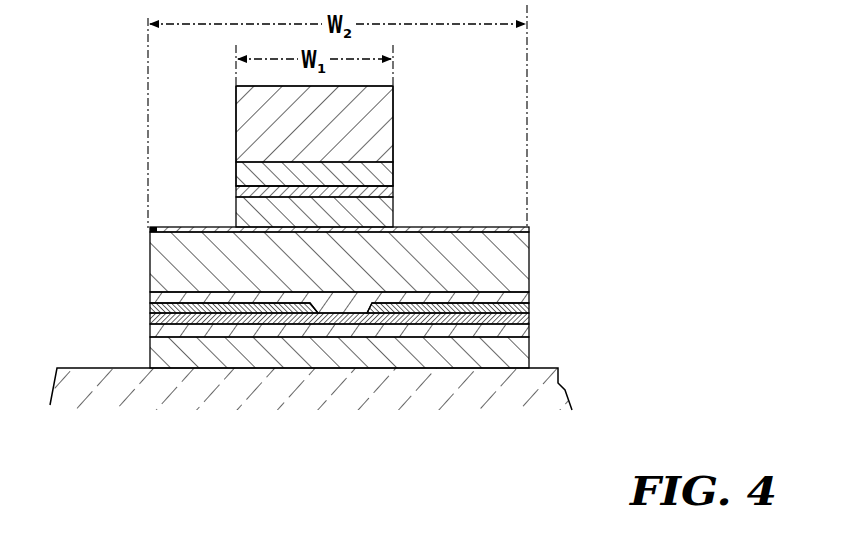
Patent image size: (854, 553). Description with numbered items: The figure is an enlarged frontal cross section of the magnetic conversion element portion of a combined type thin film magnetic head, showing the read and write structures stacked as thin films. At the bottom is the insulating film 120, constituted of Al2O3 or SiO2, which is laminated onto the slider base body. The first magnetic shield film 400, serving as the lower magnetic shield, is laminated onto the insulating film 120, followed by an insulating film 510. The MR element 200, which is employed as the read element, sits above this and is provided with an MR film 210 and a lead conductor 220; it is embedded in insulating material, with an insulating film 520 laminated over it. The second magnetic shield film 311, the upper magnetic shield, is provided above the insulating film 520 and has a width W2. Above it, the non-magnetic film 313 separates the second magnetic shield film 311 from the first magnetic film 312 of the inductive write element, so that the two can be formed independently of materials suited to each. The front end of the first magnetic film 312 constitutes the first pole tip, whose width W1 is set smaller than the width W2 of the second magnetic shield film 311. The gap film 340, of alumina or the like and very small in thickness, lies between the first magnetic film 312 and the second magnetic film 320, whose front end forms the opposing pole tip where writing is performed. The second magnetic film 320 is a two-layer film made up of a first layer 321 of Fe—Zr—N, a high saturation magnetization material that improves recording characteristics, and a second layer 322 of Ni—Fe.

The insulating film 120 is at (107, 392).
The MR element 200 is at (298, 376).
The MR film 210 is at (332, 313).
The lead conductor 220 is at (235, 308).
The second magnetic shield film 311 is at (158, 265).
The first magnetic film 312 is at (380, 211).
The non-magnetic film 313 is at (150, 229).
The second magnetic film 320 is at (393, 86).
The first layer 321 is at (250, 172).
The second layer 322 is at (248, 115).
The gap film 340 is at (245, 190).
The first magnetic shield film 400 is at (517, 351).
The insulating film 510 is at (517, 331).
The insulating film 520 is at (520, 296).